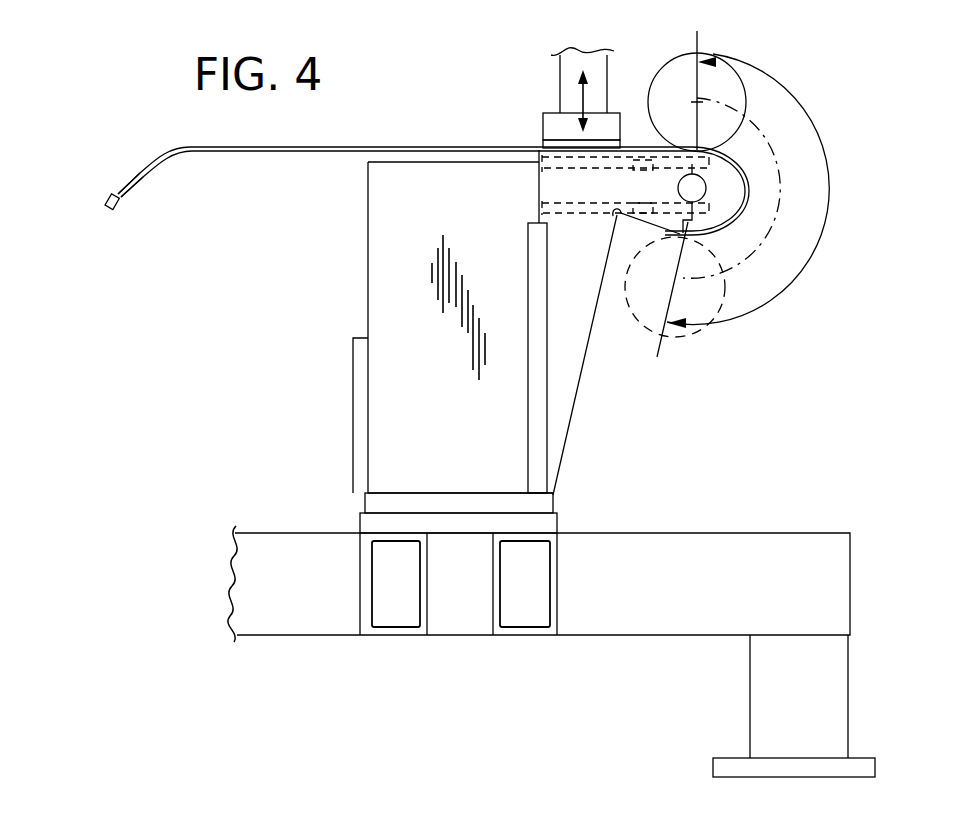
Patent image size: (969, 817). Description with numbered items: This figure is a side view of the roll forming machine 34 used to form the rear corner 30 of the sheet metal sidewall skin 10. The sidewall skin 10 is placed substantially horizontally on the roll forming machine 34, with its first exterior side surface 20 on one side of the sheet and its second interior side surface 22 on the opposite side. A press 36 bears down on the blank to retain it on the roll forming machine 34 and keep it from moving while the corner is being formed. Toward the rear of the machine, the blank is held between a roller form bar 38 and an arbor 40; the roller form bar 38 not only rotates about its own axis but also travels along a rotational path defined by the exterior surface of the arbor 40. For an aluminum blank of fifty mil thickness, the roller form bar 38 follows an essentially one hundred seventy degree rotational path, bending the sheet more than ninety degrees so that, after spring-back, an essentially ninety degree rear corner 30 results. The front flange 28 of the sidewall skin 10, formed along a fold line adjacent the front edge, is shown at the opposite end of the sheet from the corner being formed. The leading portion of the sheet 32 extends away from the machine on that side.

The sidewall skin 10 is at (752, 166).
The first exterior side surface 20 is at (323, 147).
The second interior side surface 22 is at (343, 151).
The front flange 28 is at (108, 204).
The rear corner 30 is at (746, 188).
The web leading end 32 is at (126, 174).
The roll forming machine 34 is at (343, 304).
The press 36 is at (560, 90).
The roller form bar 38 is at (716, 58).
The arbor 40 is at (735, 206).